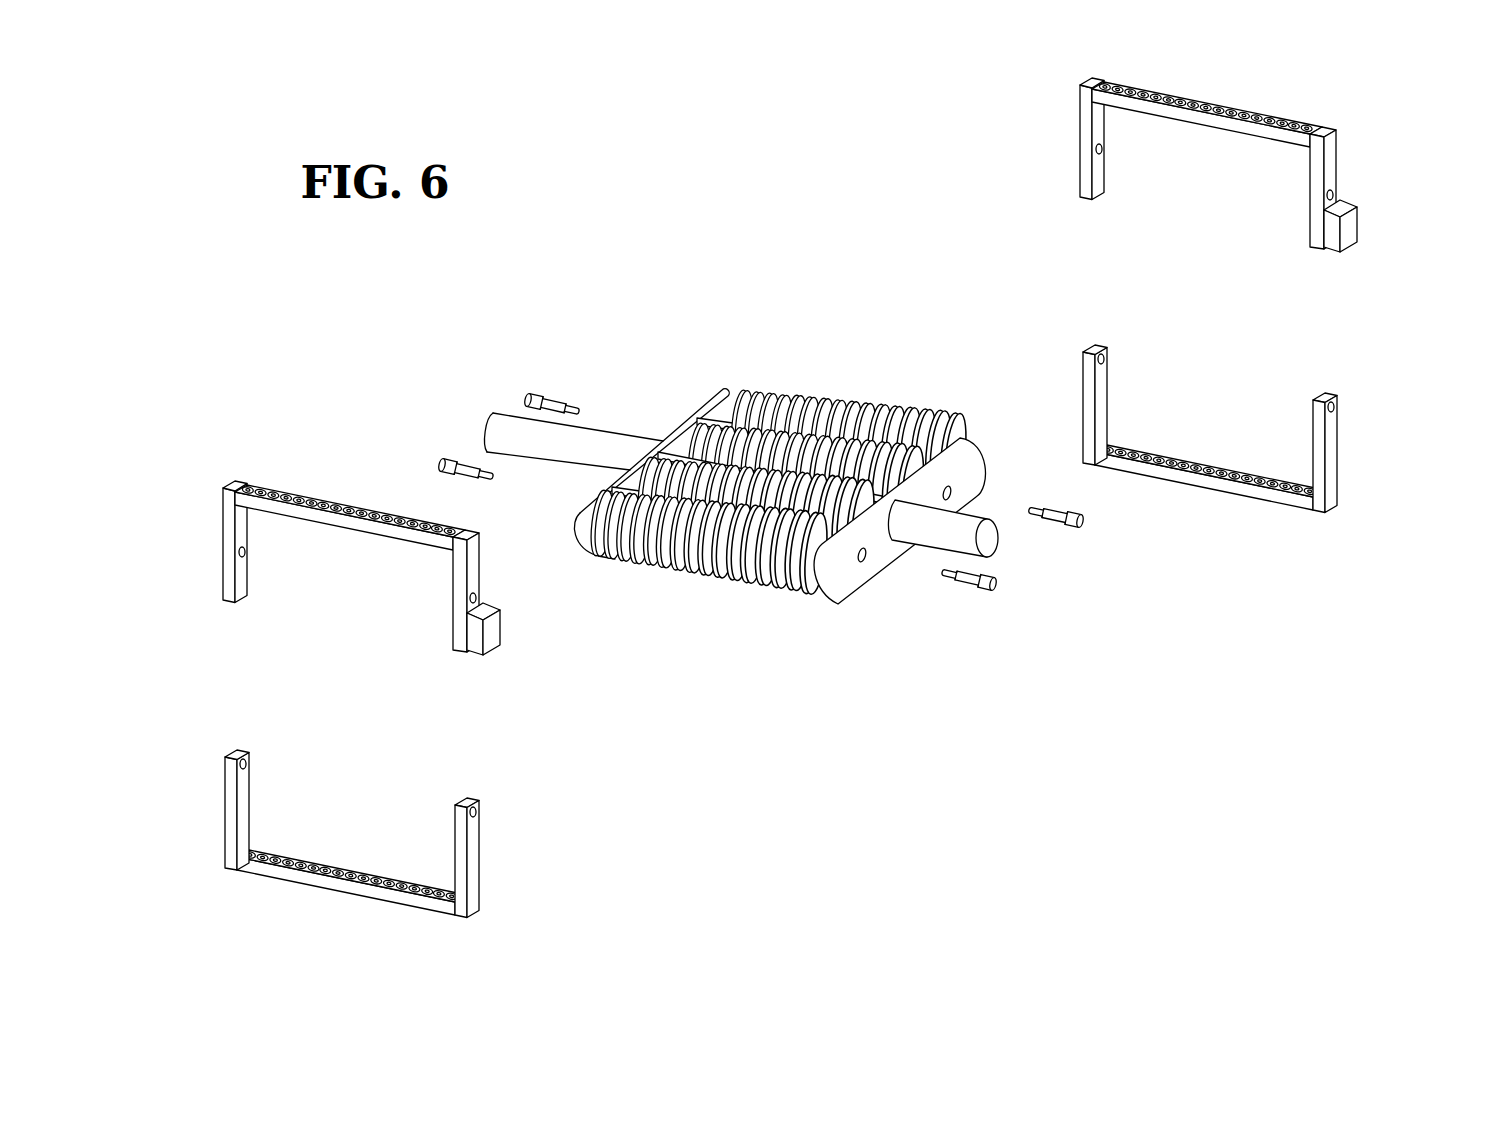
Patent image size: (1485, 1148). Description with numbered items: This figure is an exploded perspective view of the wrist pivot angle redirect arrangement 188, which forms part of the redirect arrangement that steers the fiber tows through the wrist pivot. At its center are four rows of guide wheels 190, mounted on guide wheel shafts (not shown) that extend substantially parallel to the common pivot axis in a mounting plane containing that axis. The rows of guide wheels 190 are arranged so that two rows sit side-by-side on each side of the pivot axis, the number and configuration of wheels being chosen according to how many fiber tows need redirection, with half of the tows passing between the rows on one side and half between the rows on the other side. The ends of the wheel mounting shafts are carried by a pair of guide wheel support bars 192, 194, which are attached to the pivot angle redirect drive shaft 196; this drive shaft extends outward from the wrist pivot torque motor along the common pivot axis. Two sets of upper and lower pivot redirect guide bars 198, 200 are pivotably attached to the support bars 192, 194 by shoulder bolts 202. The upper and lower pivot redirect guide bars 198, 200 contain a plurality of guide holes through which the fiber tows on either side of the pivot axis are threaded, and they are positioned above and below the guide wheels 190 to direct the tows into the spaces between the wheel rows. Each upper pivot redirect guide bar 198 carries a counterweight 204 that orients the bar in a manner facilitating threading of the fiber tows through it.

The wrist pivot angle redirect arrangement 188 is at (1162, 800).
The guide wheels 190 is at (786, 400).
The guide wheel support bar 192 is at (845, 580).
The guide wheel support bar 194 is at (712, 402).
The pivot angle redirect drive shaft 196 is at (974, 522).
The upper pivot redirect guide bar 198 is at (227, 527).
The lower pivot redirect guide bar 200 is at (475, 858).
The shoulder bolts 202 is at (522, 392).
The counterweight 204 is at (498, 630).